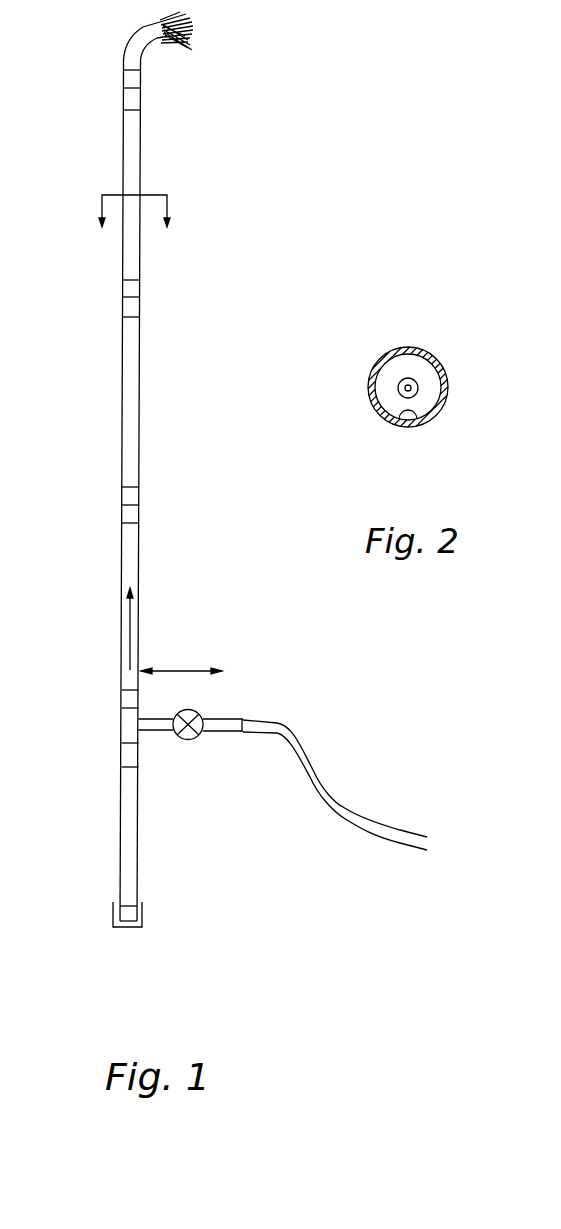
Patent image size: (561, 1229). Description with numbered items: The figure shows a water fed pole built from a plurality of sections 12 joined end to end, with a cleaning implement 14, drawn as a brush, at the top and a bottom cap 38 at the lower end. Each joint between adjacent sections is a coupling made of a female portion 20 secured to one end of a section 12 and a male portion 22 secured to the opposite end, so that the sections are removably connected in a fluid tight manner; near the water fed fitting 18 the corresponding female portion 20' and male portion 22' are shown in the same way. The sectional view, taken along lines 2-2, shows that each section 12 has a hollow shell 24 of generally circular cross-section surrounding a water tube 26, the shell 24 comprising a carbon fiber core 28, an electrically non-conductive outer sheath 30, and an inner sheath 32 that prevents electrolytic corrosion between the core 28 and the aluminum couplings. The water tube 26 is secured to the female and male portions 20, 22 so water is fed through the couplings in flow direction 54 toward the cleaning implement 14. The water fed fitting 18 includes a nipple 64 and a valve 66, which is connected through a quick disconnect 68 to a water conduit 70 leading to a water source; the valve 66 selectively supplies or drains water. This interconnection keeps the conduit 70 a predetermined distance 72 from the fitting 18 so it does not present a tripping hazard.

In FIG. 1, the section 12 is at (141, 160).
In FIG. 2, the section 12 is at (360, 352).
In FIG. 1, the cleaning implement 14 is at (132, 42).
In FIG. 1, the water fed fitting 18 is at (118, 729).
In FIG. 1, the female portion 20 is at (104, 488).
In FIG. 1, the female portion 20' is at (102, 694).
In FIG. 1, the male portion 22 is at (158, 306).
In FIG. 1, the male portion 22' is at (159, 758).
In FIG. 1, the section line 2- 2 is at (133, 224).
In FIG. 2, the hollow shell 24 is at (439, 353).
In FIG. 2, the water tube 26 is at (418, 388).
In FIG. 2, the core 28 is at (368, 385).
In FIG. 2, the outer sheath 30 is at (380, 414).
In FIG. 2, the inner sheath 32 is at (413, 421).
In FIG. 1, the bottom cap 38 is at (133, 930).
In FIG. 1, the flow direction 54 is at (128, 624).
In FIG. 1, the nipple 64 is at (155, 718).
In FIG. 1, the valve 66 is at (196, 709).
In FIG. 1, the quick disconnect 68 is at (243, 718).
In FIG. 1, the water conduit 70 is at (322, 755).
In FIG. 1, the predetermined distance 72 is at (182, 668).